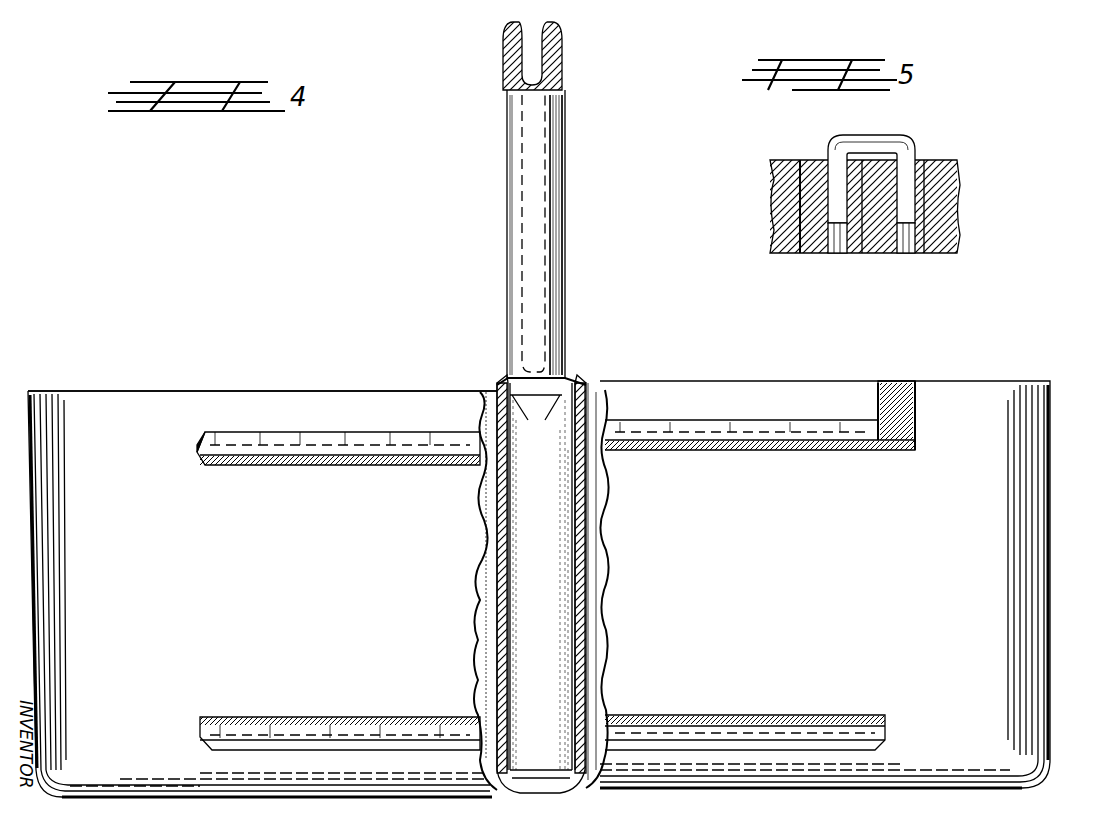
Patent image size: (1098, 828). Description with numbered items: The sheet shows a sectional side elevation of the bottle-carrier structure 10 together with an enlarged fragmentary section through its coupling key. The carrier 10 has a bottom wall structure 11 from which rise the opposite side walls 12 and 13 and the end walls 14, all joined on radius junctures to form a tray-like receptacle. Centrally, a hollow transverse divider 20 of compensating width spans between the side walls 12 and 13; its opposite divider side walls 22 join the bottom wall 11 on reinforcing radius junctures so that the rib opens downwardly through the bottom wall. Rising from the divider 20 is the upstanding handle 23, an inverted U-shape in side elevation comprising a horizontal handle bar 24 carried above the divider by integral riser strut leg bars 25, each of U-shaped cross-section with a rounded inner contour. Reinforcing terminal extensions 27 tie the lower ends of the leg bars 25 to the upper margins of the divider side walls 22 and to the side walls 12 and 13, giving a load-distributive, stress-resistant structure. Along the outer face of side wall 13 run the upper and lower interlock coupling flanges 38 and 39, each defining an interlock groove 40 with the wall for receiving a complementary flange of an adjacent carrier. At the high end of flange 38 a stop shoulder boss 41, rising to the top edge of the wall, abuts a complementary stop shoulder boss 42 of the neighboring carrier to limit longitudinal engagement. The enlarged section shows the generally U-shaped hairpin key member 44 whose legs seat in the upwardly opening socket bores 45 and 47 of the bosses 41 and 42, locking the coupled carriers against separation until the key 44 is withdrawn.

In FIG. 4, the bottle-carrier structure 10 is at (141, 360).
In FIG. 4, the bottom wall structure 11 is at (320, 797).
In FIG. 4, the side wall 12 is at (525, 680).
In FIG. 4, the side wall 13 is at (222, 406).
In FIG. 4, the end wall 14 is at (18, 612).
In FIG. 4, the transverse divider 20 is at (586, 392).
In FIG. 4, the divider side wall 22 is at (486, 540).
In FIG. 4, the upstanding handle 23 is at (567, 150).
In FIG. 4, the handle bar 24 is at (548, 84).
In FIG. 4, the riser strut leg bar 25 is at (560, 218).
In FIG. 4, the reinforcing terminal extension 27 is at (536, 423).
In FIG. 4, the interlock coupling flange 38 is at (396, 466).
In FIG. 4, the interlock coupling flange 39 is at (790, 730).
In FIG. 4, the interlock groove 40 is at (322, 440).
In FIG. 4, the stop shoulder boss 41 is at (906, 395).
In FIG. 5, the stop shoulder boss 41 is at (928, 218).
In FIG. 5, the stop shoulder boss 42 is at (800, 232).
In FIG. 5, the key member 44 is at (905, 148).
In FIG. 5, the socket bore 45 is at (912, 252).
In FIG. 5, the socket bore 47 is at (832, 252).